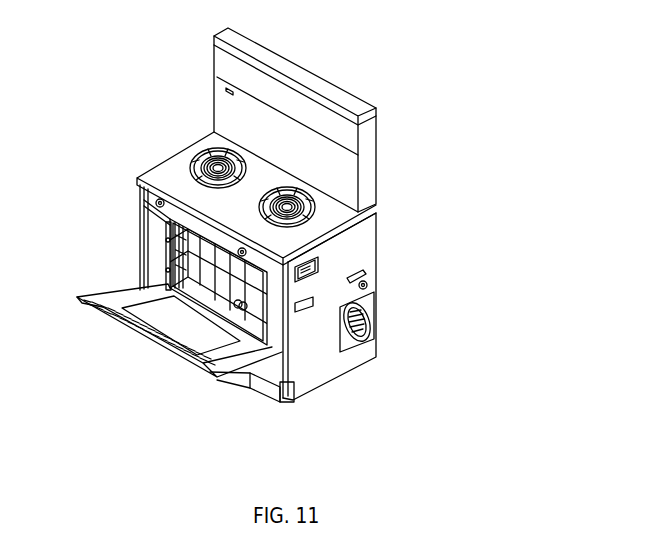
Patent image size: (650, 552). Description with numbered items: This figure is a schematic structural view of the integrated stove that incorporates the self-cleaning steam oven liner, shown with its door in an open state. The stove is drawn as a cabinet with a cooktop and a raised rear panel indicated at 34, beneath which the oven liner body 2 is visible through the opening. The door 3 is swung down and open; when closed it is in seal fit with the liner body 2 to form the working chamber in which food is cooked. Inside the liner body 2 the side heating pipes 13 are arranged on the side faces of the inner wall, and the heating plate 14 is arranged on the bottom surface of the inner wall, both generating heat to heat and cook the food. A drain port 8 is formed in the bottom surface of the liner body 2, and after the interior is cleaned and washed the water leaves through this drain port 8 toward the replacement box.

The backsplash 34 is at (427, 182).
The liner body 2 is at (167, 277).
The side heating pipes 13 is at (172, 230).
The heating plate 14 is at (108, 290).
The door 3 is at (225, 373).
The drain port 8 is at (247, 308).